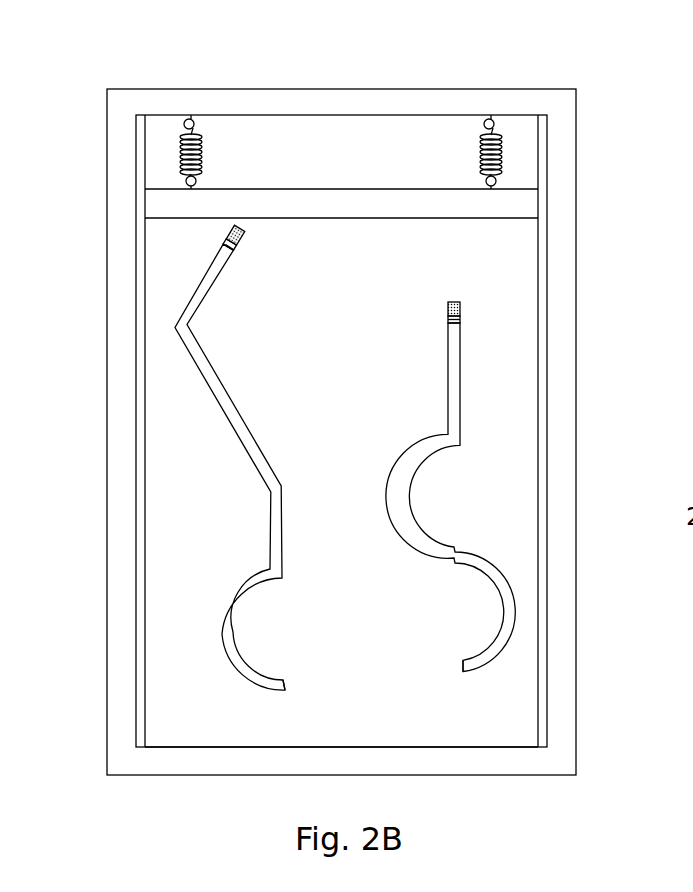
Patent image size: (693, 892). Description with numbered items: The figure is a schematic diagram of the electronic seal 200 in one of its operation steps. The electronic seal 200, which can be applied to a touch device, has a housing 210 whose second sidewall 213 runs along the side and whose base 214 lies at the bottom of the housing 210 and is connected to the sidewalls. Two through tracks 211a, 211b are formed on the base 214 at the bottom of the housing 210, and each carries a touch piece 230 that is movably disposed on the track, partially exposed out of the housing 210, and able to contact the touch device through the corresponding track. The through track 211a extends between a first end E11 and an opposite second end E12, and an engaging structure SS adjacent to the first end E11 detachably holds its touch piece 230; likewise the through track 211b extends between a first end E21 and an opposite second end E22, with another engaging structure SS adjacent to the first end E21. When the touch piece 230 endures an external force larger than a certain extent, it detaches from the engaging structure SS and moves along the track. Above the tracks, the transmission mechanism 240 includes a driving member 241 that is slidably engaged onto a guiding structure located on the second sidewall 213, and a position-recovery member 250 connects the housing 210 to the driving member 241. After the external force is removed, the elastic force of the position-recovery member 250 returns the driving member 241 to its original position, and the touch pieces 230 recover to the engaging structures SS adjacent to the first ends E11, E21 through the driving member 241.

The electronic seal 200 is at (90, 47).
The transmission mechanism 240 is at (596, 102).
The housing 210 is at (563, 357).
The second sidewall 213 is at (124, 396).
The base 214 is at (168, 706).
The driving member 241 is at (522, 205).
The position-recovery member 250 is at (503, 148).
The through track 211a is at (514, 528).
The through track 211b is at (177, 432).
The touch piece 230 is at (461, 306).
The first end E11 is at (452, 302).
The second end E12 is at (463, 665).
The first end E21 is at (237, 223).
The second end E22 is at (288, 688).
The engaging structure SS is at (225, 243).